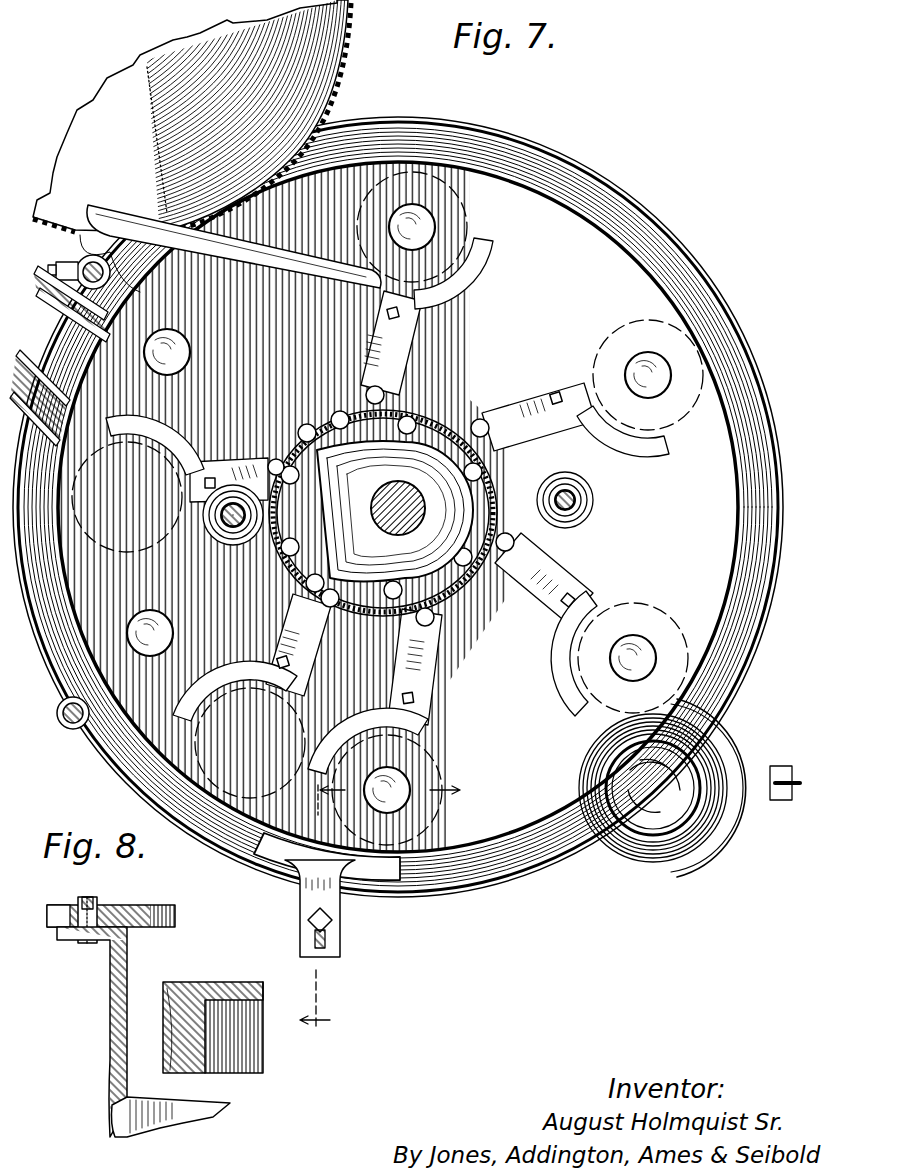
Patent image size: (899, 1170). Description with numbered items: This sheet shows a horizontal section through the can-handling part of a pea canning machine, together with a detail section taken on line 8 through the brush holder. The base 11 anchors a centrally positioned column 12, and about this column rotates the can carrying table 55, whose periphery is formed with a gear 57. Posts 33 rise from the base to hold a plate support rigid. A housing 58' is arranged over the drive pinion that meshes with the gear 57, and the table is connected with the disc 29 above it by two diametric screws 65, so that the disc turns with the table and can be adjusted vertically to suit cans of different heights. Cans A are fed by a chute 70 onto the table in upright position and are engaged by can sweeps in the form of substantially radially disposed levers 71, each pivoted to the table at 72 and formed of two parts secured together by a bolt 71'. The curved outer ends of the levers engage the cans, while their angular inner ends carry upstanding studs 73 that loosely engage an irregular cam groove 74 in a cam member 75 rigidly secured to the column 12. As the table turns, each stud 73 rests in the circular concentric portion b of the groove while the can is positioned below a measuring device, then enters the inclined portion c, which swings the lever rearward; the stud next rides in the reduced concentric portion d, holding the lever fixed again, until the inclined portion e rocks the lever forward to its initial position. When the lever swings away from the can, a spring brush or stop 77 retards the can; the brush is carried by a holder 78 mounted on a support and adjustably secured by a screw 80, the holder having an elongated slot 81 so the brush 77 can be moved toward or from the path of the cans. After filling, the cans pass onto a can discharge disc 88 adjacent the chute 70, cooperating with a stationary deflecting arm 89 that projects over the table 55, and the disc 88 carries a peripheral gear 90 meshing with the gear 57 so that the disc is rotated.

In FIG. 7, the base 11 is at (722, 333).
In FIG. 8, the base 11 is at (112, 1120).
In FIG. 7, the column 12 is at (388, 528).
In FIG. 7, the post 33 is at (68, 728).
In FIG. 7, the can carrying table 55 is at (722, 425).
In FIG. 8, the can carrying table 55 is at (205, 982).
In FIG. 8, the gear 57 is at (165, 1030).
In FIG. 7, the housing 58' is at (689, 788).
In FIG. 7, the screw 65 is at (596, 508).
In FIG. 7, the chute 70 is at (60, 356).
In FIG. 7, the lever 71 is at (387, 506).
In FIG. 7, the bolt 71' is at (402, 508).
In FIG. 7, the pivotal connection 72 is at (386, 393).
In FIG. 7, the stud 73 is at (305, 420).
In FIG. 7, the cam groove 74 is at (240, 540).
In FIG. 7, the cam member 75 is at (497, 503).
In FIG. 7, the spring brush 77 is at (250, 862).
In FIG. 8, the spring brush 77 is at (172, 906).
In FIG. 7, the holder 78 is at (342, 915).
In FIG. 8, the holder 78 is at (52, 905).
In FIG. 7, the screw 80 is at (308, 922).
In FIG. 8, the screw 80 is at (90, 898).
In FIG. 7, the elongated slot 81 is at (326, 945).
In FIG. 8, the elongated slot 81 is at (80, 897).
In FIG. 7, the can discharge disc 88 is at (186, 116).
In FIG. 7, the deflecting arm 89 is at (160, 225).
In FIG. 7, the gear 90 is at (350, 23).
In FIG. 8, the disc 29 is at (112, 990).
In FIG. 7, the section line 8 is at (380, 915).
In FIG. 7, the can A is at (177, 552).
In FIG. 7, the circular concentric portion of cam groove b is at (300, 503).
In FIG. 7, the inclined portion of cam groove c is at (368, 612).
In FIG. 7, the reduced circular concentric portion of cam groove d is at (490, 480).
In FIG. 7, the inclined portion of cam groove e is at (347, 400).